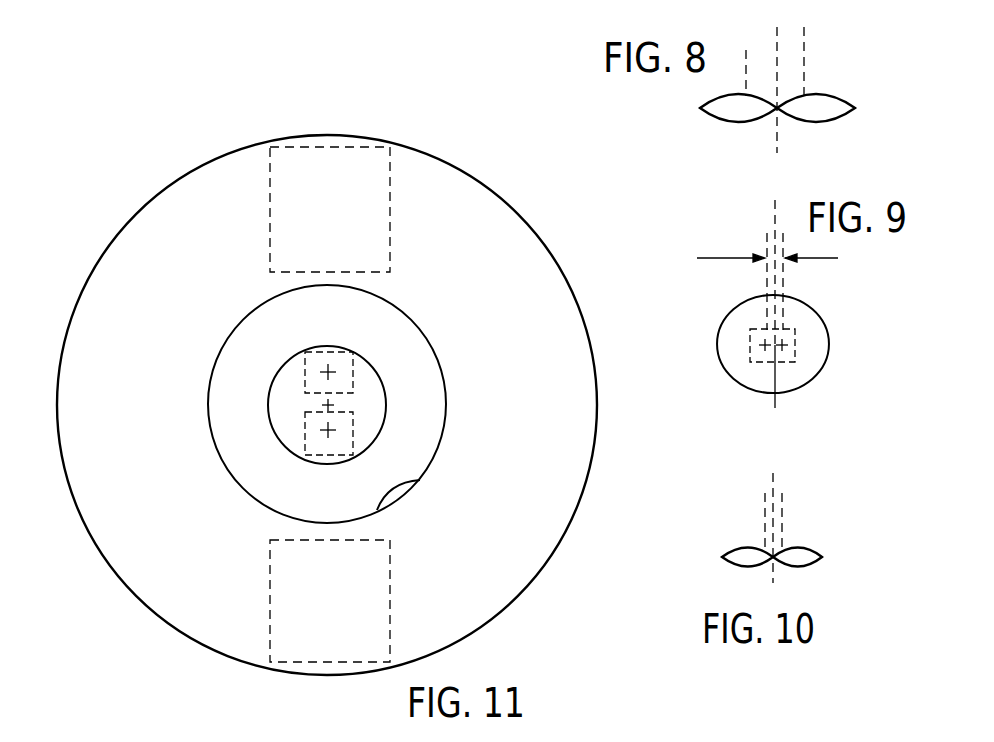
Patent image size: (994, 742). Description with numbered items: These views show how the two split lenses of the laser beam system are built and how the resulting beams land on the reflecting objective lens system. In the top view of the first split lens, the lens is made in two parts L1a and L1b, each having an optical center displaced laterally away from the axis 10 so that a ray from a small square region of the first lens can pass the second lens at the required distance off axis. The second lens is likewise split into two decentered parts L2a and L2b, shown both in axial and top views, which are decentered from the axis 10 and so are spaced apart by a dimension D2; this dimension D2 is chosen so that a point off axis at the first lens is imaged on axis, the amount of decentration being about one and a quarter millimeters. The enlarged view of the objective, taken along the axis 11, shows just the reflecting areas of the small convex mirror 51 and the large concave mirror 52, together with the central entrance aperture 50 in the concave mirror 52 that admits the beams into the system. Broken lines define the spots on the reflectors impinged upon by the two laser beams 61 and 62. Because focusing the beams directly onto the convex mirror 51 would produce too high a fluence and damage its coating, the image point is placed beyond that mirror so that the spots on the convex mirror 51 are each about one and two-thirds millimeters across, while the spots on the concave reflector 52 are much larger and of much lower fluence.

In FIG. 8, the axis 10 is at (777, 49).
In FIG. 9, the axis 10 is at (775, 221).
In FIG. 10, the axis 10 is at (773, 481).
In FIG. 11, the axis 11 is at (336, 403).
In FIG. 11, the entrance aperture 50 is at (417, 483).
In FIG. 11, the convex mirror 51 is at (385, 408).
In FIG. 11, the concave mirror 52 is at (493, 217).
In FIG. 9, the laser beam 61 is at (750, 344).
In FIG. 11, the laser beam 61 is at (392, 607).
In FIG. 9, the laser beam 62 is at (797, 352).
In FIG. 11, the laser beam 62 is at (390, 197).
In FIG. 8, the first split-lens part L1a is at (716, 101).
In FIG. 8, the first split-lens part L1b is at (835, 97).
In FIG. 9, the second split-lens part L2a is at (728, 318).
In FIG. 10, the second split-lens part L2a is at (742, 548).
In FIG. 9, the second split-lens part L2b is at (828, 330).
In FIG. 10, the second split-lens part L2b is at (800, 547).
In FIG. 9, the decentration dimension D2 is at (783, 261).